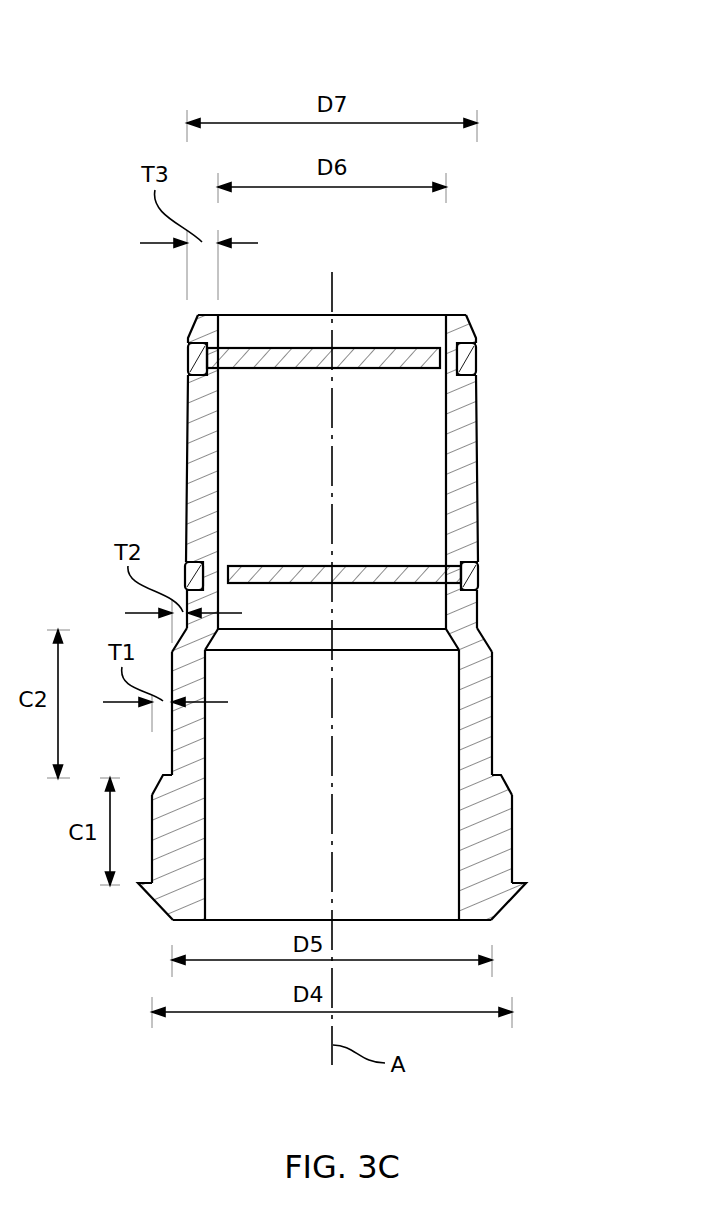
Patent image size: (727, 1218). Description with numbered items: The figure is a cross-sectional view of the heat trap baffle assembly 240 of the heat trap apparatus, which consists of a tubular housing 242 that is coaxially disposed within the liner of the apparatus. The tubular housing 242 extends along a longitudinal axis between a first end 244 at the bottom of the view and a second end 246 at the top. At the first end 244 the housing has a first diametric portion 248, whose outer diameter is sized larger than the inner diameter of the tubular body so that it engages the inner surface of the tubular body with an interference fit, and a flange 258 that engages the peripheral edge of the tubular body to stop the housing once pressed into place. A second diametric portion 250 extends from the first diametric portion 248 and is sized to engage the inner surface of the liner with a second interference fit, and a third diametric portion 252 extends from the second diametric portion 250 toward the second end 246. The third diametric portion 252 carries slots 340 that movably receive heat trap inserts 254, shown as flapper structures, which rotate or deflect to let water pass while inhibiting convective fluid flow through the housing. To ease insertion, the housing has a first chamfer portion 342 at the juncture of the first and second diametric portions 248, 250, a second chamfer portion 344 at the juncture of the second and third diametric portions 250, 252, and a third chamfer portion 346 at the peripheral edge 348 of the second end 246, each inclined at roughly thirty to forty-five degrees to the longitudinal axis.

The heat trap baffle assembly 240 is at (562, 61).
The tubular housing 242 is at (186, 922).
The first end 244 is at (500, 934).
The second end 246 is at (467, 302).
The first diametric portion 248 is at (518, 830).
The second diametric portion 250 is at (493, 717).
The third diametric portion 252 is at (479, 420).
The heat trap inserts 254 is at (262, 348).
The flange 258 is at (522, 886).
The slots 340 is at (480, 352).
The first chamfer portion 342 is at (158, 792).
The second chamfer portion 344 is at (487, 647).
The third chamfer portion 346 is at (192, 326).
The peripheral edge 348 is at (208, 315).